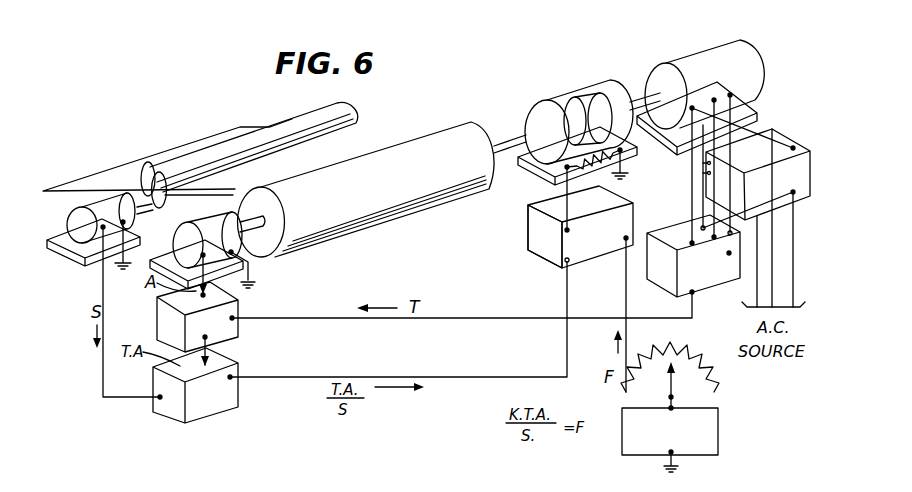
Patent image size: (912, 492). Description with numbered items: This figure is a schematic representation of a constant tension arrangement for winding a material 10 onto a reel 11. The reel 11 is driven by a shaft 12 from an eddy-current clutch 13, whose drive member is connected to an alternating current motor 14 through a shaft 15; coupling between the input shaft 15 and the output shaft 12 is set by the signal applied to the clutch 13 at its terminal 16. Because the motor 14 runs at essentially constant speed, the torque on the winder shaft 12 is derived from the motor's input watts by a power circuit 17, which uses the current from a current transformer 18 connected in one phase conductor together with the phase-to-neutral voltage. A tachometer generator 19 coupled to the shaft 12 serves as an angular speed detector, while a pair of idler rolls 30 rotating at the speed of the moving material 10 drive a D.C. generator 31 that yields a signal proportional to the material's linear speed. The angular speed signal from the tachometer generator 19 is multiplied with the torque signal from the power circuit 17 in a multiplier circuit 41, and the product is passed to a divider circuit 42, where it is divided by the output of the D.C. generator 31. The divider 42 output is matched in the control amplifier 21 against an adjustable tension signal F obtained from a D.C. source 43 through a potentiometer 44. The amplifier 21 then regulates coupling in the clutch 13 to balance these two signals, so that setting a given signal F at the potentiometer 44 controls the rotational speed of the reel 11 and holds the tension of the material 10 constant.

The material 10 is at (384, 138).
The reel 11 is at (445, 190).
The shaft 12 is at (514, 131).
The eddy-current clutch 13 is at (552, 99).
The motor 14 is at (737, 61).
The shaft 15 is at (642, 89).
The terminal 16 is at (560, 203).
The power circuit 17 is at (670, 232).
The current transformer 18 is at (798, 152).
The tachometer generator 19 is at (230, 200).
The control amplifier 21 is at (540, 258).
The idler rolls 30 is at (143, 168).
The D.C. generator 31 is at (84, 212).
The multiplier circuit 41 is at (240, 306).
The divider circuit 42 is at (222, 361).
The D.C. source 43 is at (716, 429).
The potentiometer 44 is at (693, 356).